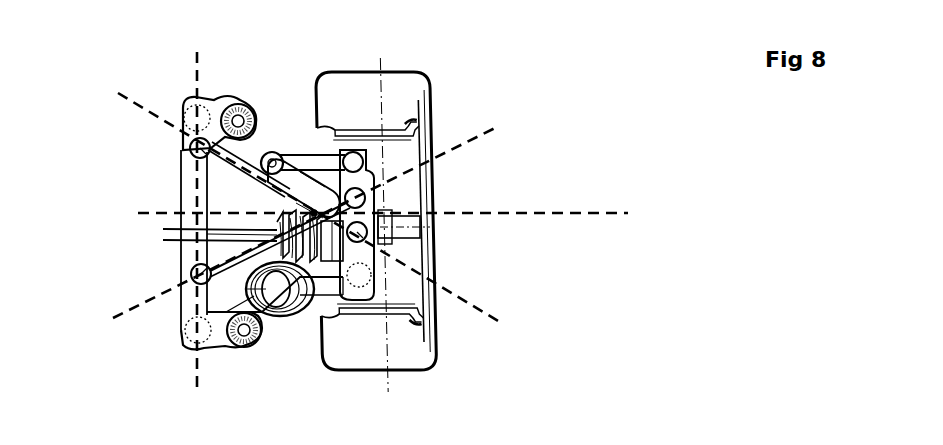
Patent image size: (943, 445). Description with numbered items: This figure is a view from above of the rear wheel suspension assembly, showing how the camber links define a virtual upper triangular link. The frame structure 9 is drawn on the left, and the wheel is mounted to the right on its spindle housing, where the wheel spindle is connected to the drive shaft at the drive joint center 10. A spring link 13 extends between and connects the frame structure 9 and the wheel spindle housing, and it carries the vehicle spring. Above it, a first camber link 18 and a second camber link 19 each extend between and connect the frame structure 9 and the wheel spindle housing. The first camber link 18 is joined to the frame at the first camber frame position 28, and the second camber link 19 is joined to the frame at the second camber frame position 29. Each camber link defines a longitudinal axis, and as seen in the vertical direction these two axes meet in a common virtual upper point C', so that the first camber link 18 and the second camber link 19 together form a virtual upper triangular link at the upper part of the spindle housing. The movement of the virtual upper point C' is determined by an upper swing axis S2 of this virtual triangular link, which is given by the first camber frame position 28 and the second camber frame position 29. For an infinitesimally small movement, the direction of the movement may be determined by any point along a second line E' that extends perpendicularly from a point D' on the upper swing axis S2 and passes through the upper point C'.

The frame structure 9 is at (183, 200).
The drive joint center 10 is at (314, 213).
The spring link 13 is at (328, 293).
The first camber link 18 is at (276, 157).
The second camber link 19 is at (190, 232).
The first camber frame position 28 is at (190, 147).
The second camber frame position 29 is at (192, 272).
The upper swing axis S2 is at (195, 388).
The virtual upper point C' is at (310, 223).
The point on the upper swing axis D' is at (286, 207).
The second line E' is at (407, 189).